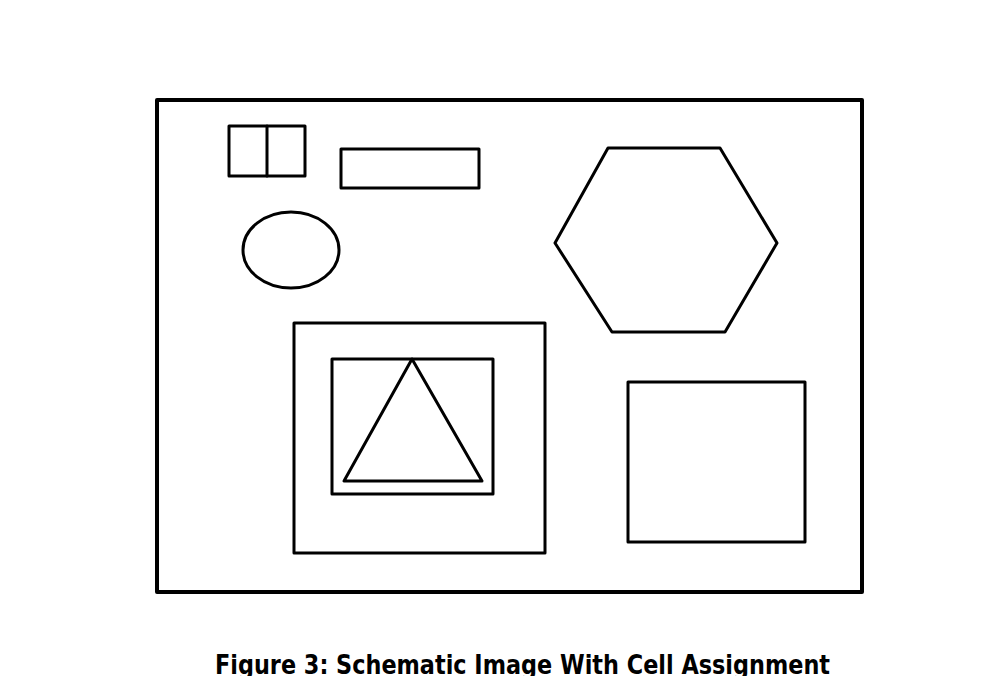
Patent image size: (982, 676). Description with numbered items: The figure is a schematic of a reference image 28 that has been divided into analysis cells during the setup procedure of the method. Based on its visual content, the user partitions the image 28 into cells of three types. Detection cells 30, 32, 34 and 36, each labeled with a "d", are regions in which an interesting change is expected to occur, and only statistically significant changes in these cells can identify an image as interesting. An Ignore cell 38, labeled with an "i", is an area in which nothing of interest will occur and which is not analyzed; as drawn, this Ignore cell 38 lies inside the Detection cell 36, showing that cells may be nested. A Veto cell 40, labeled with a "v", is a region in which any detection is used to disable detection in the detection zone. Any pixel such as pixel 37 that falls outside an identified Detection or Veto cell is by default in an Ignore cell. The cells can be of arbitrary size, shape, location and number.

The image 28 is at (545, 88).
The Detection cell 30 is at (227, 157).
The Detection cell 32 is at (305, 143).
The Detection cell 34 is at (435, 188).
The Detection cell 36 is at (420, 322).
The pixel 37 is at (215, 392).
The Ignore cell 38 is at (443, 497).
The Veto cell 40 is at (722, 378).